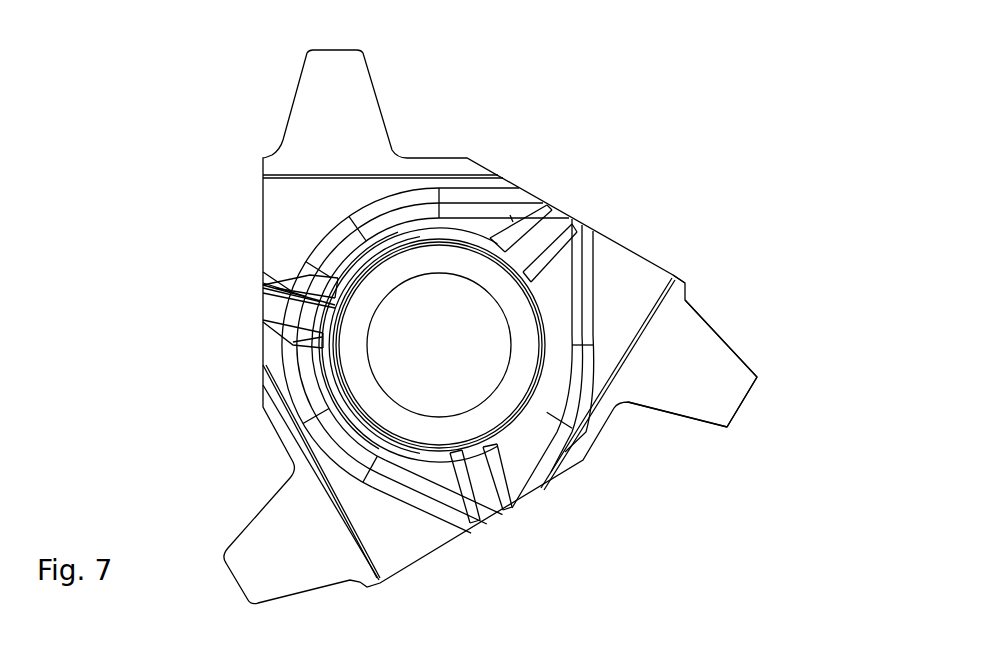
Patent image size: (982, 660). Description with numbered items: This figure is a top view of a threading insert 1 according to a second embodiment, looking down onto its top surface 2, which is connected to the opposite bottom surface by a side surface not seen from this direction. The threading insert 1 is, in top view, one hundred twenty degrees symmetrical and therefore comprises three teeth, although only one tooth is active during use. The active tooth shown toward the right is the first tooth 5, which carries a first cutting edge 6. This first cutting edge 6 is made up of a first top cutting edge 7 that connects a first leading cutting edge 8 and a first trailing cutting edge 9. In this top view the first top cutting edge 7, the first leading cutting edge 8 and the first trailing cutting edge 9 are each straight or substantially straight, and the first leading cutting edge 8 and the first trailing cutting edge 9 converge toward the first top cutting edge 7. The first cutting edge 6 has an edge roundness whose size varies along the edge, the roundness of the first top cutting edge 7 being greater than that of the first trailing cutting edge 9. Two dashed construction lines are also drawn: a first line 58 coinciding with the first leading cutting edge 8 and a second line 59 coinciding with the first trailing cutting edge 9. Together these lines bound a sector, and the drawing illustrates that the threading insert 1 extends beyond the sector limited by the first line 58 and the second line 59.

The threading insert 1 is at (672, 128).
The top surface 2 is at (302, 218).
The first tooth 5 is at (685, 375).
The first cutting edge 6 is at (723, 427).
The first top cutting edge 7 is at (742, 412).
The first leading cutting edge 8 is at (673, 415).
The first trailing cutting edge 9 is at (733, 346).
The first line 58 is at (743, 433).
The second line 59 is at (771, 385).